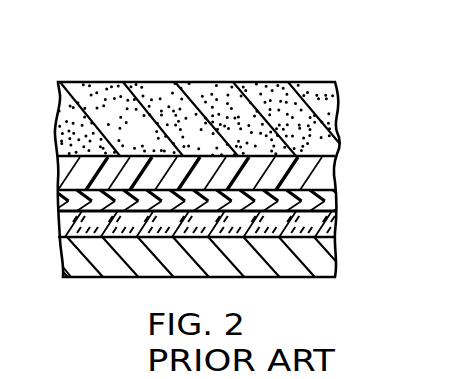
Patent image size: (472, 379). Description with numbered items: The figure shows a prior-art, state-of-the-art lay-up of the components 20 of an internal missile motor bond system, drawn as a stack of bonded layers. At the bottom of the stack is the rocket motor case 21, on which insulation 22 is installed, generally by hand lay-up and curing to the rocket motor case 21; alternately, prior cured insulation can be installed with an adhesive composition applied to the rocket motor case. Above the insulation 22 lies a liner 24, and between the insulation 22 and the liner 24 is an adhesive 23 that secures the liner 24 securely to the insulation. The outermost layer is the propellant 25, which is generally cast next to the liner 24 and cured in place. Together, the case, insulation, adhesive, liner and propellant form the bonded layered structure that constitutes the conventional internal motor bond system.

The components of internal missile motor bond system 20 is at (186, 81).
The rocket motor case 21 is at (338, 251).
The insulation 22 is at (337, 223).
The adhesive 23 is at (337, 198).
The liner 24 is at (341, 166).
The propellant 25 is at (342, 104).